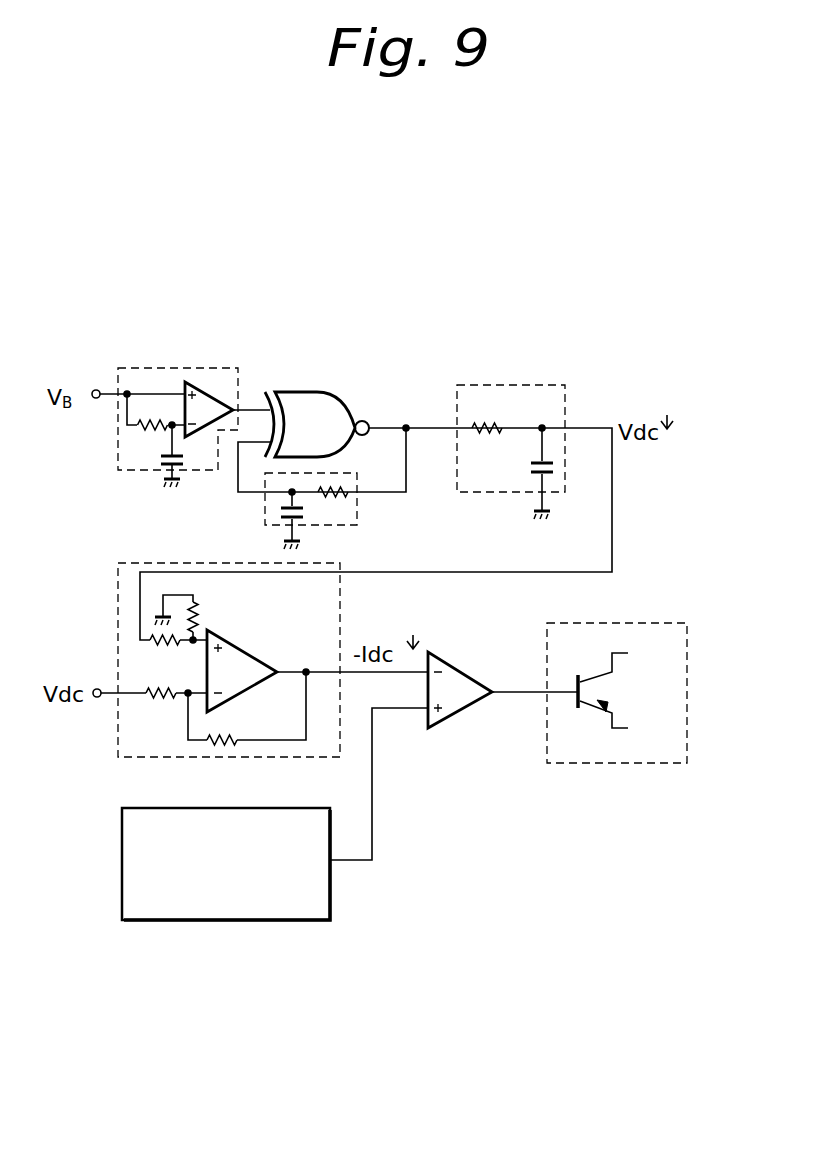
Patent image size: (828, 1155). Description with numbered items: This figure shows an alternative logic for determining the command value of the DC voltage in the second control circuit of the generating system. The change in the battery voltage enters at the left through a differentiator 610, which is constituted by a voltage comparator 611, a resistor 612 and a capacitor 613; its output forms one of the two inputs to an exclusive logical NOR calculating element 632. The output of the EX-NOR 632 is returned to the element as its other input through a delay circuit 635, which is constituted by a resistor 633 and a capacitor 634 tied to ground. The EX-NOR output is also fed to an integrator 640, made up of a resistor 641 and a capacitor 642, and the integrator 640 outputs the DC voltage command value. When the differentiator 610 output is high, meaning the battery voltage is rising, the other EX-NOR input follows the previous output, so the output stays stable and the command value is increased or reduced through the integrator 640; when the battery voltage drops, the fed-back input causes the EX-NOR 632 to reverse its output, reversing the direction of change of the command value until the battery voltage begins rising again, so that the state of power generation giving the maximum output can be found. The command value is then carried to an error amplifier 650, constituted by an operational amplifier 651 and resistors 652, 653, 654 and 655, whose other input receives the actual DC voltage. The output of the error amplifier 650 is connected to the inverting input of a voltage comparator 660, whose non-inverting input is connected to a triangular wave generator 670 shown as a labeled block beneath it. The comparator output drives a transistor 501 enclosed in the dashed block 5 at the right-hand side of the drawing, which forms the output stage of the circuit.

The differentiator 610 is at (232, 368).
The voltage comparator 611 is at (203, 387).
The resistor 612 is at (150, 421).
The capacitor 613 is at (162, 458).
The exclusive logical NOR calculating element 632 is at (300, 390).
The resistor 633 is at (333, 500).
The capacitor 634 is at (265, 517).
The delay circuit 635 is at (357, 466).
The integrator 640 is at (598, 339).
The resistor 641 is at (482, 417).
The capacitor 642 is at (555, 463).
The error amplifier 650 is at (118, 720).
The operational amplifier 651 is at (207, 705).
The resistor 652 is at (160, 635).
The resistor 653 is at (160, 688).
The resistor 654 is at (213, 743).
The resistor 655 is at (203, 608).
The voltage comparator 660 is at (457, 713).
The triangular wave generator 670 is at (226, 921).
The output stage 5 is at (690, 663).
The transistor 501 is at (605, 691).